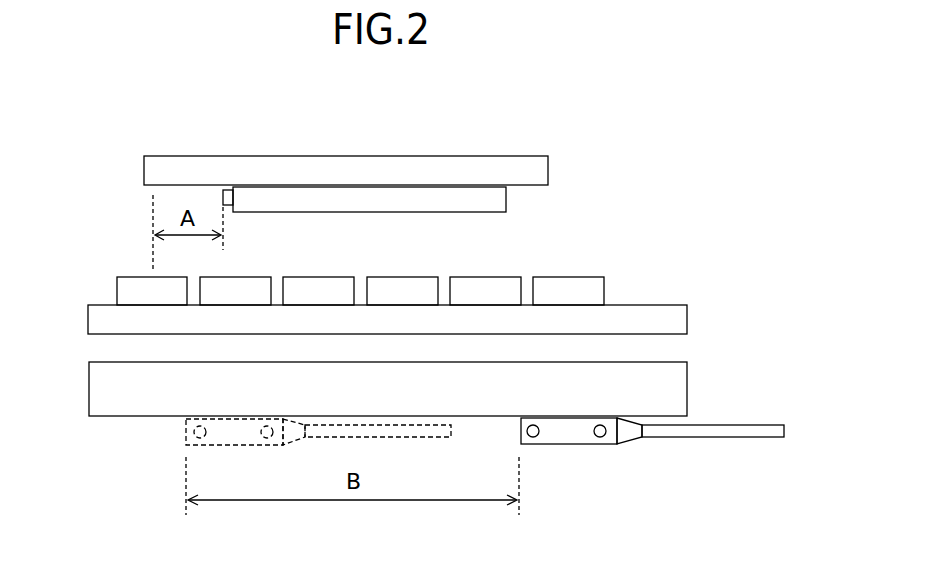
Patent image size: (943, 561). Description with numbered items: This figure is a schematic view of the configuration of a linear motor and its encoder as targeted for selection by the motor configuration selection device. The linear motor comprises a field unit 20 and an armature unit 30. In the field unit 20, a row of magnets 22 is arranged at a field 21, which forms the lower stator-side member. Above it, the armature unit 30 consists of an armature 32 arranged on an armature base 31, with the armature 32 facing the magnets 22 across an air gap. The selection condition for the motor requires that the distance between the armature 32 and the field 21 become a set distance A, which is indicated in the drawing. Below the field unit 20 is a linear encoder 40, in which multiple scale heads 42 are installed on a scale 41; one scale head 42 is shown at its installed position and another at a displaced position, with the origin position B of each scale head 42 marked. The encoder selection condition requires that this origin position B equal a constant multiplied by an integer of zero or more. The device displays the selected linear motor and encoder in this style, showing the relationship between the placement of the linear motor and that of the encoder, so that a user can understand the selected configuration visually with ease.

The field unit 20 is at (442, 285).
The field 21 is at (660, 318).
The magnets 22 is at (132, 283).
The armature unit 30 is at (378, 143).
The armature base 31 is at (311, 163).
The armature 32 is at (497, 194).
The linear encoder 40 is at (433, 441).
The scale 41 is at (96, 380).
The scale heads 42 is at (569, 438).